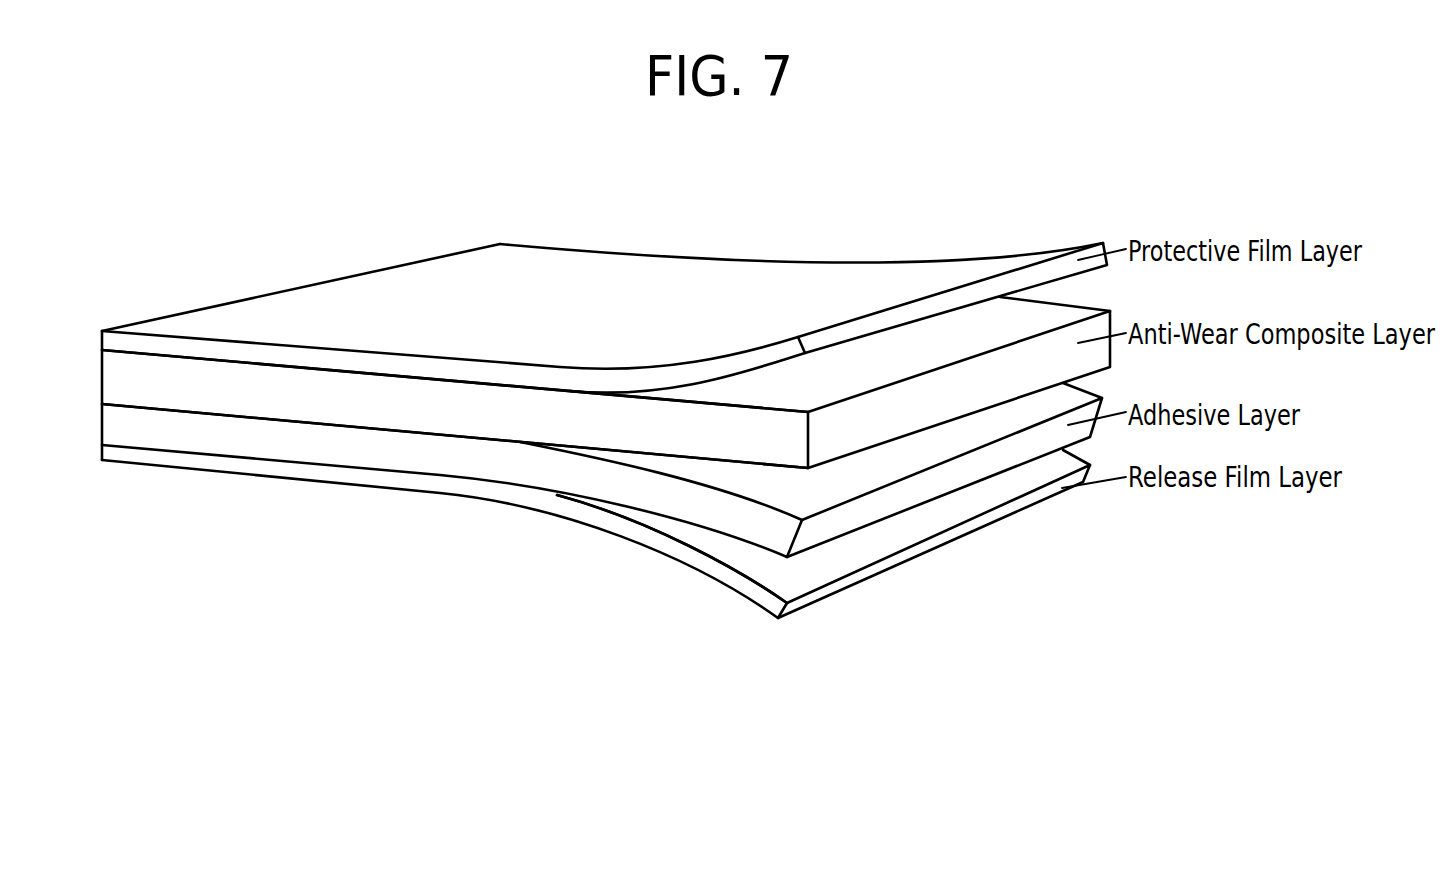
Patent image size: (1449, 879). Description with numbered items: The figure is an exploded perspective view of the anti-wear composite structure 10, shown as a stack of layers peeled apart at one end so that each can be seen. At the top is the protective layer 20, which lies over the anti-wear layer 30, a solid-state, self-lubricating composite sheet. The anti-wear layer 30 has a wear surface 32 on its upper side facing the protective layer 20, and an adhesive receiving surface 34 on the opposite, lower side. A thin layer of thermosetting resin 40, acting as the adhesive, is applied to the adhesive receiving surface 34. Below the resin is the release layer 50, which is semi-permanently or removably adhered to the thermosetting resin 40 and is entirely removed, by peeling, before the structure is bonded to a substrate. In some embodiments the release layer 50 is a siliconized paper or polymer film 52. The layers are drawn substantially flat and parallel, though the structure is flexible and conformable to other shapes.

The anti-wear composite structure 10 is at (865, 198).
The protective layer 20 is at (668, 278).
The anti-wear layer 30 is at (470, 405).
The wear surface 32 is at (253, 362).
The adhesive receiving surface 34 is at (283, 422).
The layer of thermosetting resin 40 is at (617, 477).
The release layer 50 is at (757, 592).
The siliconized paper or polymer film 52 is at (732, 548).